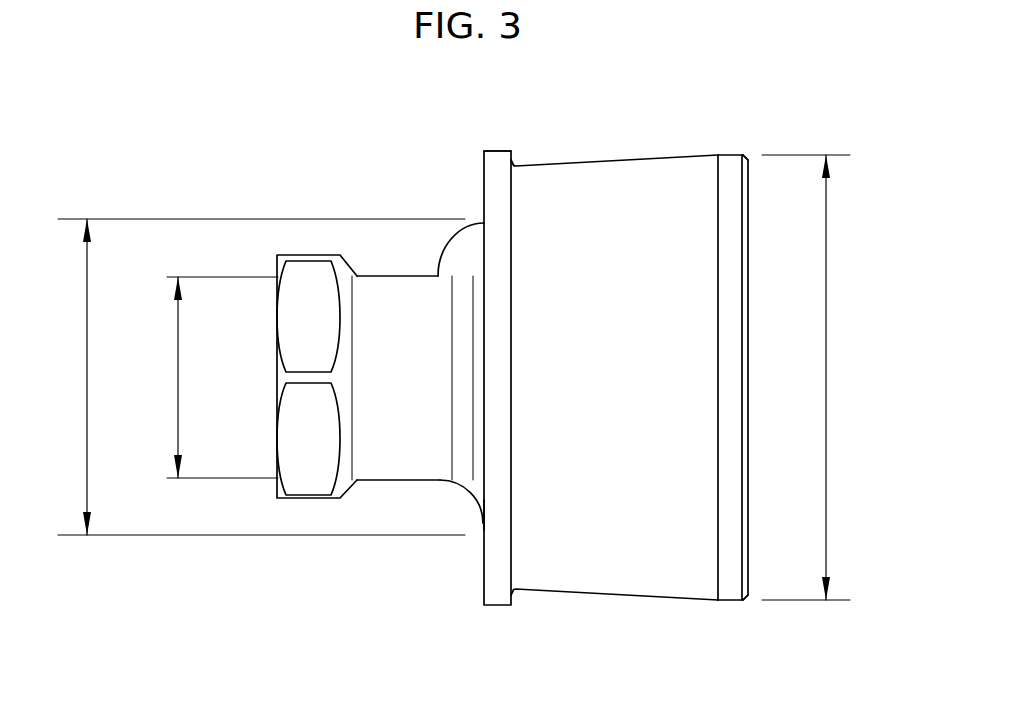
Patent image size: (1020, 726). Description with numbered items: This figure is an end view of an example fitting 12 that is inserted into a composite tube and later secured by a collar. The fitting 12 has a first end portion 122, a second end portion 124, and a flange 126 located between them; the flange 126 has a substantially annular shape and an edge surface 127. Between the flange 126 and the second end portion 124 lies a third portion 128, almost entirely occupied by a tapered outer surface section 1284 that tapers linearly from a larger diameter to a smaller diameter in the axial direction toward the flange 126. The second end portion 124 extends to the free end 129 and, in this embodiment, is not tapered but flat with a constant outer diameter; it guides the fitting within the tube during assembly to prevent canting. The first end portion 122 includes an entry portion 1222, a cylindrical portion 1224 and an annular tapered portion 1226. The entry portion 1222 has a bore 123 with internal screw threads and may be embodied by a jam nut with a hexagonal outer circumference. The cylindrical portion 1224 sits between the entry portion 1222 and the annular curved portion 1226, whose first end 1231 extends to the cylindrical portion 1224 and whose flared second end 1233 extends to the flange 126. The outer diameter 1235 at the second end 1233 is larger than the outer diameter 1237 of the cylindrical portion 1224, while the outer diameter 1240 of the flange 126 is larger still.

The fitting 12 is at (534, 397).
The first end portion 122 is at (342, 440).
The bore 123 is at (278, 392).
The second end portion 124 is at (732, 589).
The flange 126 is at (484, 155).
The edge surface 127 is at (497, 151).
The third portion 128 is at (578, 394).
The free end 129 is at (793, 377).
The entry portion 1222 is at (306, 490).
The cylindrical portion 1224 is at (392, 481).
The annular tapered portion 1226 is at (470, 496).
The first end 1231 is at (438, 273).
The second end 1233 is at (483, 523).
The outer diameter 1235 is at (87, 378).
The outer diameter 1237 is at (178, 378).
The outer diameter 1240 is at (826, 378).
The tapered outer surface section 1284 is at (588, 592).